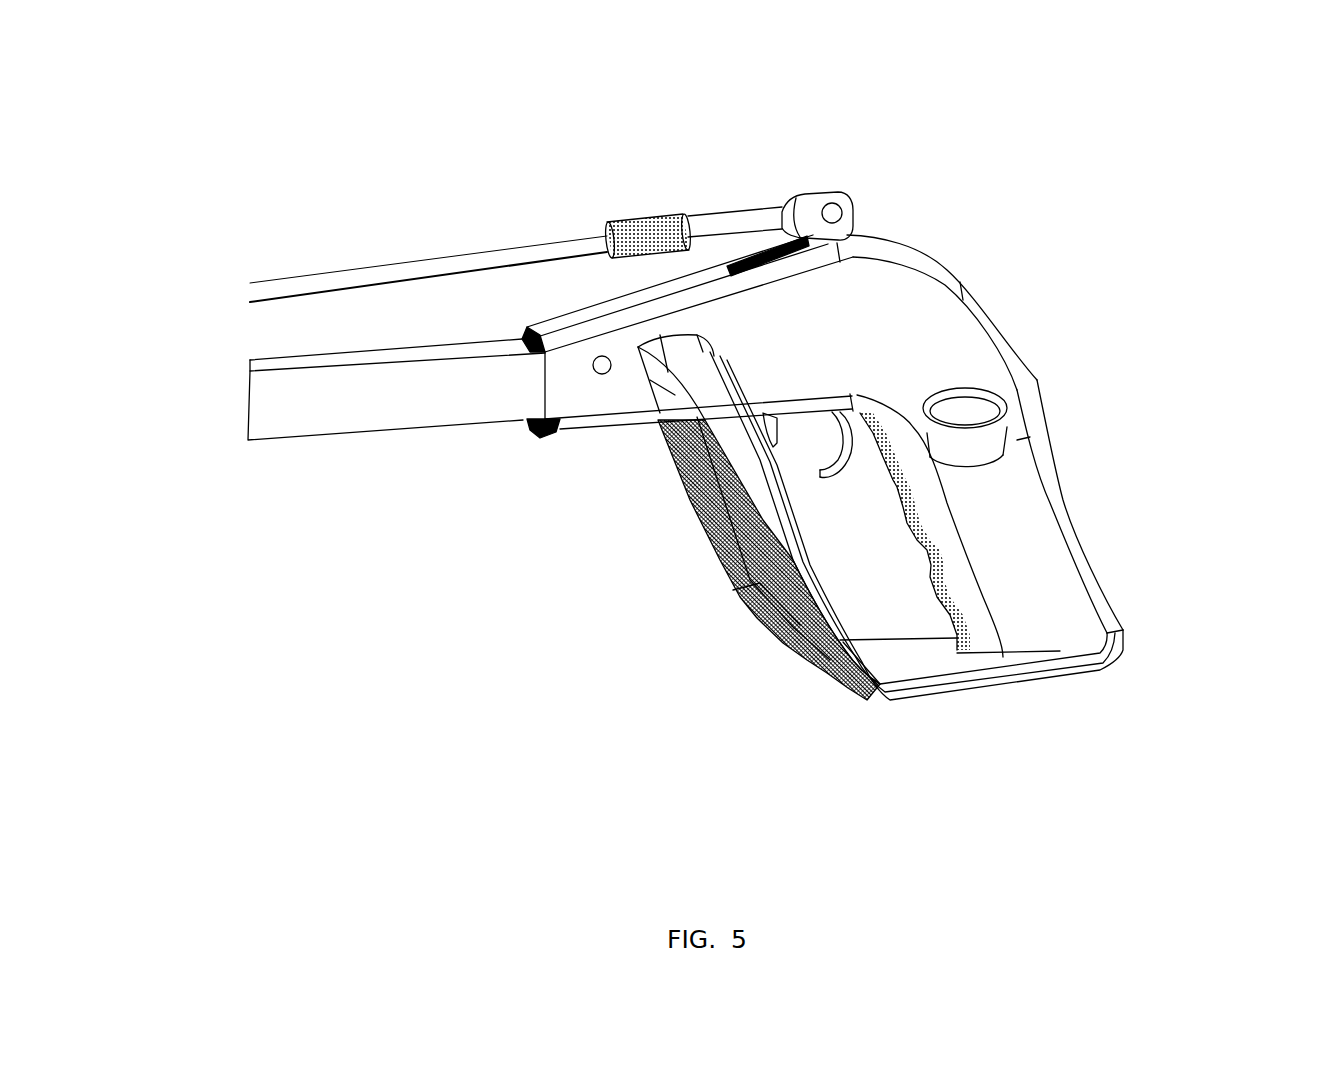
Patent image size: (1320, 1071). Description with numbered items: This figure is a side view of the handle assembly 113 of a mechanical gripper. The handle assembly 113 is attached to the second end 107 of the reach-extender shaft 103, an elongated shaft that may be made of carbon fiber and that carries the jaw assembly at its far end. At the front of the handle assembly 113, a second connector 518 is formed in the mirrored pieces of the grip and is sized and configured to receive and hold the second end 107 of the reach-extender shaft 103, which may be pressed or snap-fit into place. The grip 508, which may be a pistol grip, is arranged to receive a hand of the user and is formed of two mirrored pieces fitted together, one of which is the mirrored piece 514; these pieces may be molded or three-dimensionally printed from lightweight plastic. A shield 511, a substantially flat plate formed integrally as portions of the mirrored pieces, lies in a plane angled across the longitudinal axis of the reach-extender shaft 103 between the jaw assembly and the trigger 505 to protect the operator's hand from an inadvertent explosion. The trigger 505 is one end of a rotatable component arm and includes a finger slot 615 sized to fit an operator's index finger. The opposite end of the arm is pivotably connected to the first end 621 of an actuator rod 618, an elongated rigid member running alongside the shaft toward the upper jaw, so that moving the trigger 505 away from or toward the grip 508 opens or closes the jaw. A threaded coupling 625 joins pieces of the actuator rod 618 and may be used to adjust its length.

The reach-extender shaft 103 is at (305, 441).
The second end 107 is at (483, 538).
The handle assembly 113 is at (967, 131).
The trigger 505 is at (853, 457).
The grip 508 is at (1131, 567).
The shield 511 is at (742, 587).
The mirrored piece 514 is at (970, 353).
The second connector 518 is at (595, 400).
The finger slot 615 is at (803, 447).
The actuator rod 618 is at (522, 240).
The first end 621 is at (770, 154).
The threaded coupling 625 is at (635, 217).